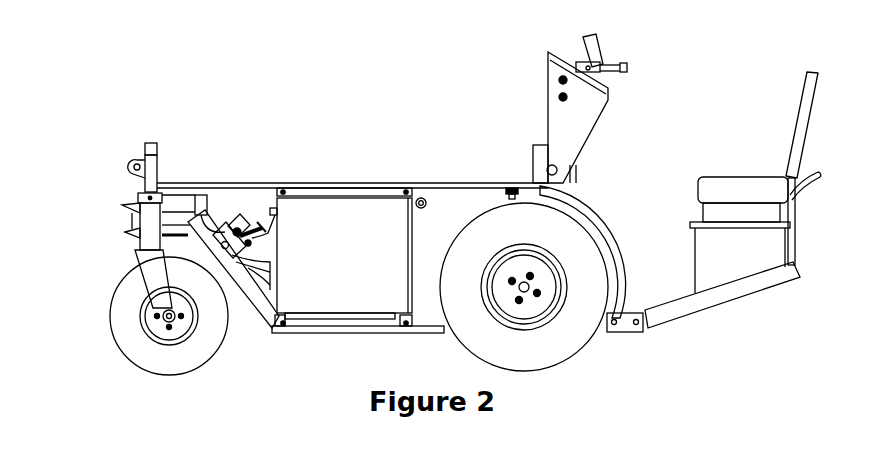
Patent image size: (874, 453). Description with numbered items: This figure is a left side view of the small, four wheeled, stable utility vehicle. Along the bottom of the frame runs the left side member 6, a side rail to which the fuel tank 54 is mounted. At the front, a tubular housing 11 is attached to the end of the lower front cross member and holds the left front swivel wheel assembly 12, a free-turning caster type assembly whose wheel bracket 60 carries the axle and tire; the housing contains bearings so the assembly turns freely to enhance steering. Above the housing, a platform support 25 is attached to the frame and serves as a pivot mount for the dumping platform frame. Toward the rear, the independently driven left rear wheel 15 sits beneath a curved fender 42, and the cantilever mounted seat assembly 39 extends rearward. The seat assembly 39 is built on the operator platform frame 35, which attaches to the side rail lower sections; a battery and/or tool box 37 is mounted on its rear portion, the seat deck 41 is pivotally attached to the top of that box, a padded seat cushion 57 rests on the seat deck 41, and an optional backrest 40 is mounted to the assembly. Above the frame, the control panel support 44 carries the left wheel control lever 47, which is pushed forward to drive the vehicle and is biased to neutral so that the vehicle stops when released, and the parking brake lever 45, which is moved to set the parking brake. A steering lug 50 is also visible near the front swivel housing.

The left side member 6 is at (252, 302).
The tubular housing 11 is at (152, 240).
The left front swivel wheel assembly 12 is at (170, 380).
The rear wheel 15 is at (560, 352).
The platform support 25 is at (145, 150).
The operator platform frame 35 is at (775, 280).
The battery and/or tool box 37 is at (718, 268).
The seat assembly 39 is at (713, 172).
The backrest 40 is at (805, 104).
The seat deck 41 is at (725, 223).
The fender 42 is at (592, 213).
The control panel support 44 is at (567, 128).
The parking brake lever 45 is at (628, 68).
The left wheel control lever 47 is at (597, 43).
The steering lugs 50 is at (128, 208).
The fuel tank 54 is at (357, 266).
The padded seat cushion 57 is at (745, 196).
The wheel bracket 60 is at (165, 288).